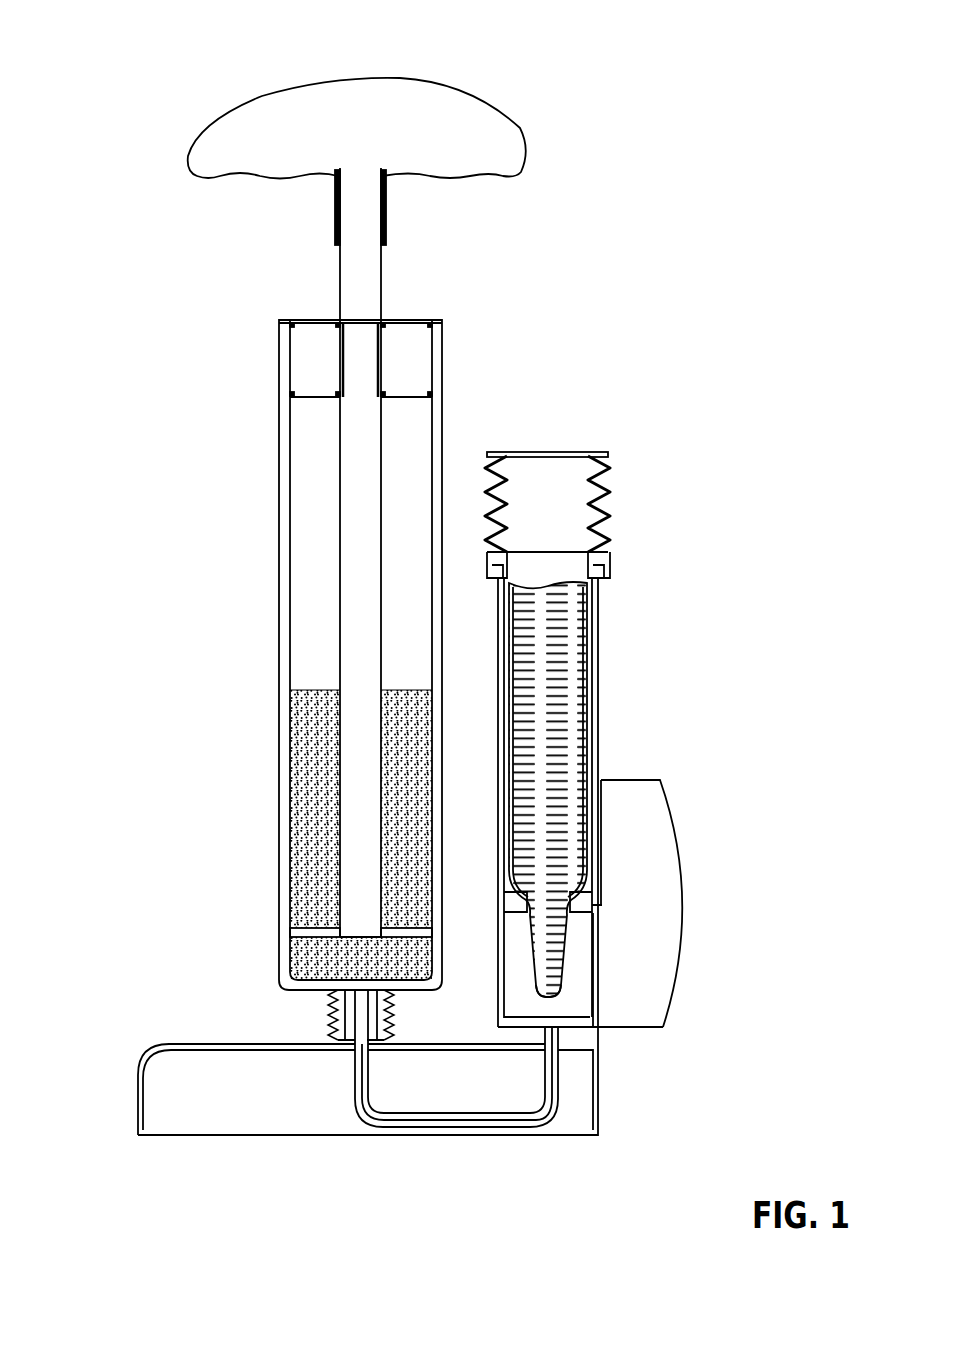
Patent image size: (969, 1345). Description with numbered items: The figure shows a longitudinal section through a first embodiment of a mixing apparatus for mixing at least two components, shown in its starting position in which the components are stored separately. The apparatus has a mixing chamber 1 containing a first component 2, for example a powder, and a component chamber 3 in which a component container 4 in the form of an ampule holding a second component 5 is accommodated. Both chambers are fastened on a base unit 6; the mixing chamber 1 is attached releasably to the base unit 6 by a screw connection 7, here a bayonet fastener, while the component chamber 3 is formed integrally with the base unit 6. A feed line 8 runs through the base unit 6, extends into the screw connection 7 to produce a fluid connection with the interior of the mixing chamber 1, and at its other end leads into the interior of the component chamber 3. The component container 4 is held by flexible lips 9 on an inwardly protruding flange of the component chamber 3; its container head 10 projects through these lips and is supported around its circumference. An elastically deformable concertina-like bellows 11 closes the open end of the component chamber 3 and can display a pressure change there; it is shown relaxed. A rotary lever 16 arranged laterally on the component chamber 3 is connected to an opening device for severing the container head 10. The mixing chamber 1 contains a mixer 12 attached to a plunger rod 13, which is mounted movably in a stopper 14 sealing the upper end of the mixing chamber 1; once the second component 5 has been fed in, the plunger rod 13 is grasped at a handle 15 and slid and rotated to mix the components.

The mixing chamber 1 is at (285, 577).
The first component 2 is at (320, 800).
The component chamber 3 is at (597, 592).
The component container 4 is at (597, 653).
The second component 5 is at (578, 718).
The base unit 6 is at (192, 1095).
The screw connection 7 is at (328, 1016).
The feed line 8 is at (545, 1090).
The flexible lips 9 is at (585, 911).
The container head 10 is at (570, 952).
The bellows 11 is at (558, 452).
The mixer 12 is at (300, 932).
The plunger rod 13 is at (372, 472).
The stopper 14 is at (312, 368).
The handle 15 is at (260, 122).
The rotary lever 16 is at (650, 843).